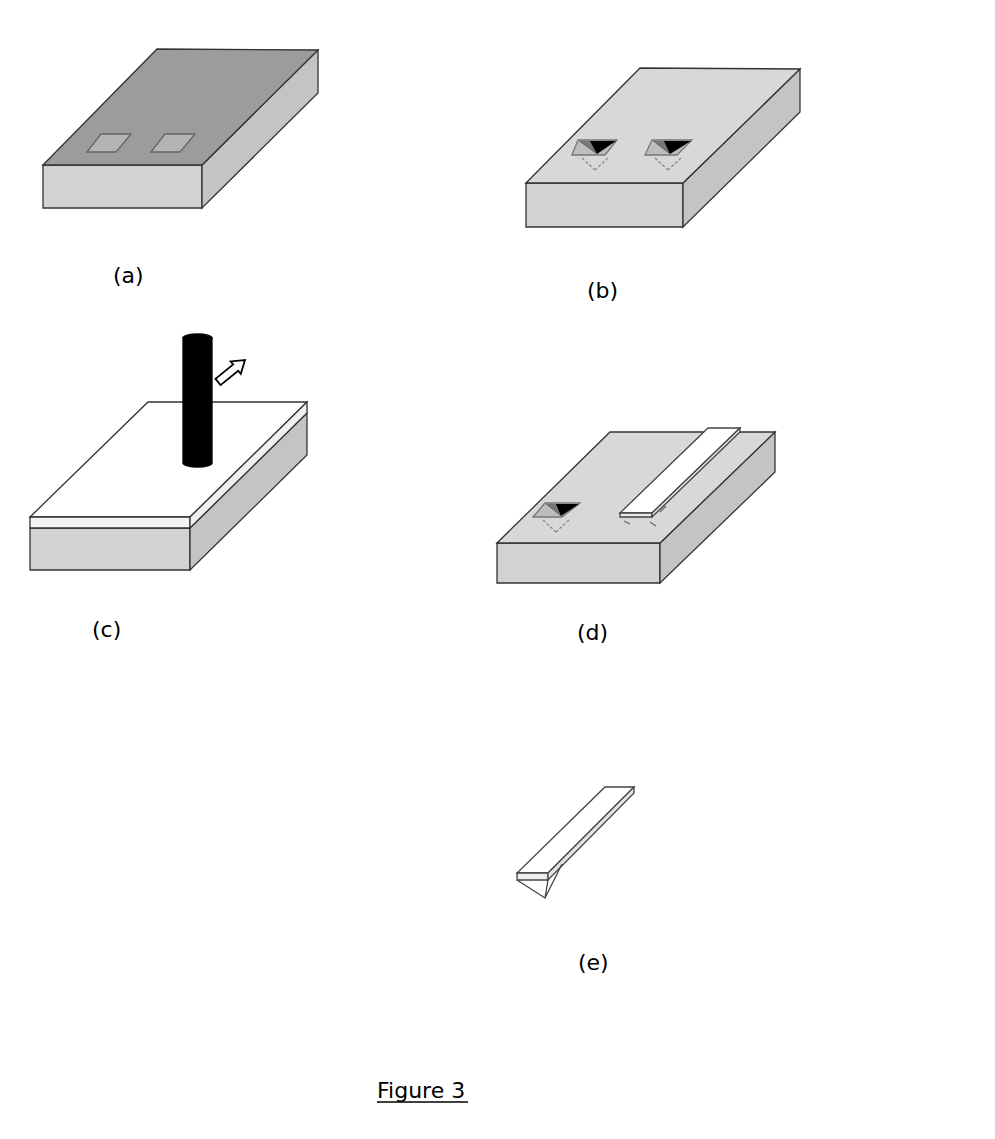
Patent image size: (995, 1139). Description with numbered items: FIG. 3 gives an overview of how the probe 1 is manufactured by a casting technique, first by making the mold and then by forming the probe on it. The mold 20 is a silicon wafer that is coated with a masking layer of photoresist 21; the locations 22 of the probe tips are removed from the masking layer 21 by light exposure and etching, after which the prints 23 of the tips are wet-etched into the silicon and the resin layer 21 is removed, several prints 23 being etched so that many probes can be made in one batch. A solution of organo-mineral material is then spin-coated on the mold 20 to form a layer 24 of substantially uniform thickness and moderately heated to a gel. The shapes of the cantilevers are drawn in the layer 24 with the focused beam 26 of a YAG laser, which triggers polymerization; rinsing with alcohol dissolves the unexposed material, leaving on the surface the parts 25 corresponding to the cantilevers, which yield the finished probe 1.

The probe 1 is at (637, 630).
The mold 20 is at (460, 293).
The masking layer of photoresist 21 is at (180, 103).
The locations of the probe tips 22 is at (170, 143).
The prints of the tips 23 is at (677, 147).
The layer 24 is at (287, 408).
The parts corresponding to the cantilevers 25 is at (698, 452).
The beam 26 is at (208, 343).